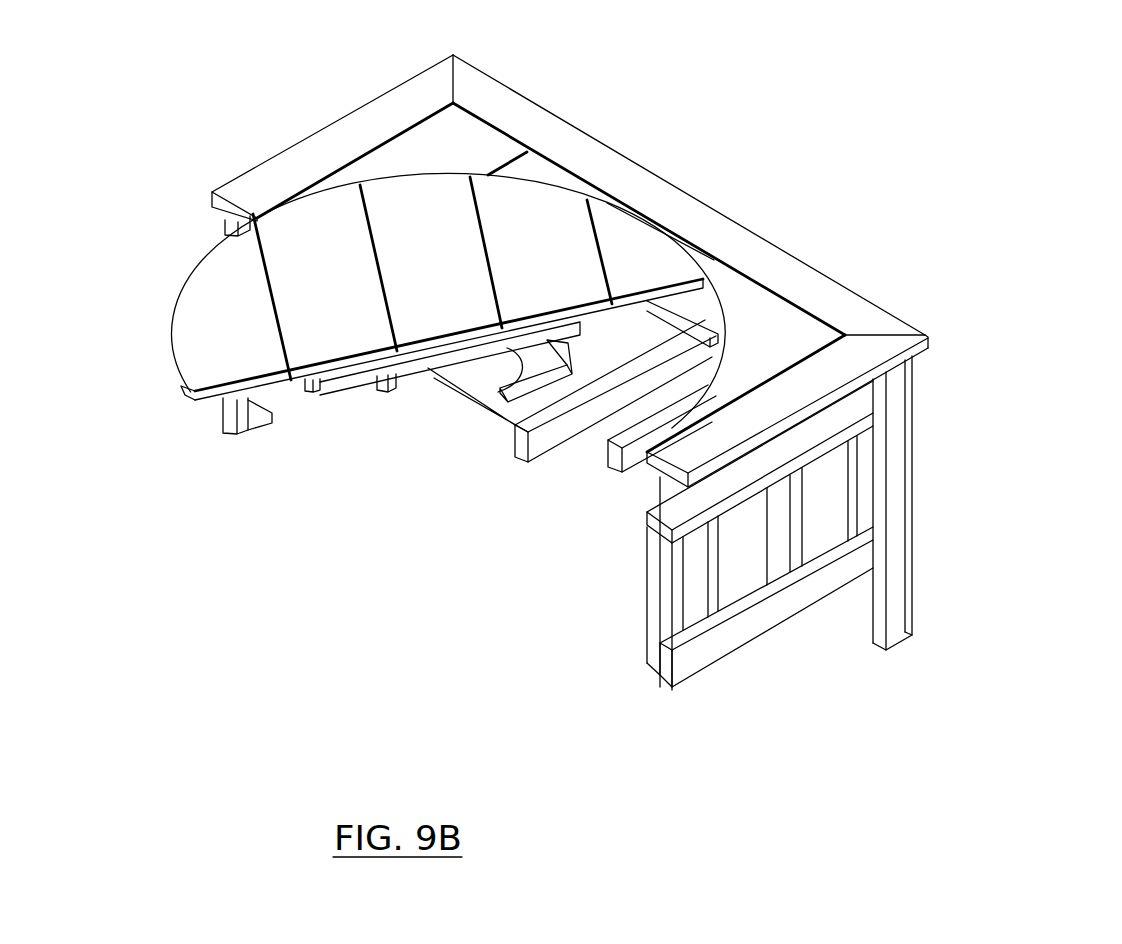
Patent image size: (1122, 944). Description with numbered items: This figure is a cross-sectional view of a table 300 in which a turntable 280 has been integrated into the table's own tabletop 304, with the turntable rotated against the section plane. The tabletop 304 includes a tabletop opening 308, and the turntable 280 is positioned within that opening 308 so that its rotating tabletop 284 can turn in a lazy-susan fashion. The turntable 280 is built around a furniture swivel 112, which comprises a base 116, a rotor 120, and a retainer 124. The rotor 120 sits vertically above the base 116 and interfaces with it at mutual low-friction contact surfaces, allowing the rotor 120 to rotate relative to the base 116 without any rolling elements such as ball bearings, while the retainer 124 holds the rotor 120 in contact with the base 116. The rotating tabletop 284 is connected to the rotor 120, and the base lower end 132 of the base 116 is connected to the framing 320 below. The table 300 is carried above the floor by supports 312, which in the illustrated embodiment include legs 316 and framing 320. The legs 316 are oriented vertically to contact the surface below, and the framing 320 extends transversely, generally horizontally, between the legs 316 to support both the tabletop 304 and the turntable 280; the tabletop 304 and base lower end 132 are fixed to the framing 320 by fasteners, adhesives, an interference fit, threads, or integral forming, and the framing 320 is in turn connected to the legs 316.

The table 300 is at (860, 110).
The turntable 280 is at (625, 233).
The tabletop opening 308 is at (733, 282).
The tabletop 304 is at (800, 323).
The supports 312 is at (1030, 463).
The legs 316 is at (897, 487).
The tabletop 284 is at (205, 403).
The furniture swivel 112 is at (470, 410).
The rotor 120 is at (400, 387).
The base 116 is at (485, 402).
The base lower end 132 is at (503, 420).
The retainer 124 is at (542, 392).
The framing 320 is at (577, 423).